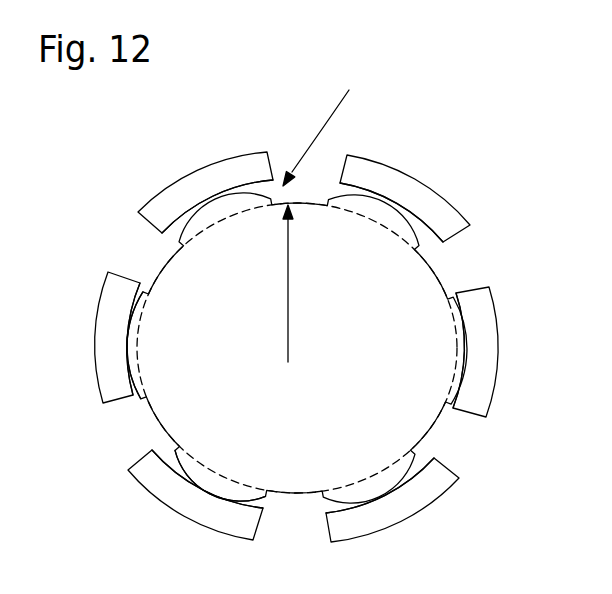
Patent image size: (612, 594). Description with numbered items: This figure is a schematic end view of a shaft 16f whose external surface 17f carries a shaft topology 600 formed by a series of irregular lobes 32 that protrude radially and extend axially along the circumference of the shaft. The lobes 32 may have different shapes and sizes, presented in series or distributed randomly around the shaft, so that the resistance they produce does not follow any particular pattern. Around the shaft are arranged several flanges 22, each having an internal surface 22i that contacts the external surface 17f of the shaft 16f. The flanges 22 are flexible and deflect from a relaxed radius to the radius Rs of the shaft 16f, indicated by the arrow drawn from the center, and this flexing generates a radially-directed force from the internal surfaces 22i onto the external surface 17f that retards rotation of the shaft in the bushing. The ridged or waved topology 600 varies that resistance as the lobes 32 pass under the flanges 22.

The shaft 16f is at (243, 348).
The external surface of the shaft 17f is at (439, 421).
The flange 22 is at (211, 163).
The internal surface of the flange 22i is at (152, 207).
The irregular lobes 32 is at (140, 283).
The shaft topology 600 is at (340, 127).
The radius of the shaft Rs is at (270, 283).